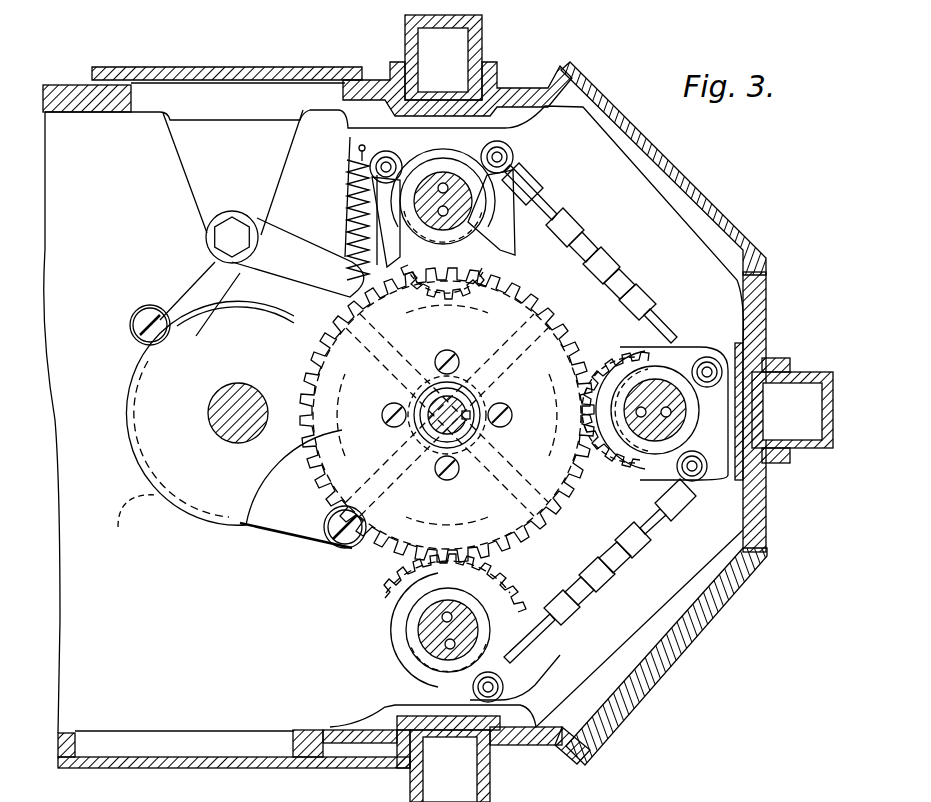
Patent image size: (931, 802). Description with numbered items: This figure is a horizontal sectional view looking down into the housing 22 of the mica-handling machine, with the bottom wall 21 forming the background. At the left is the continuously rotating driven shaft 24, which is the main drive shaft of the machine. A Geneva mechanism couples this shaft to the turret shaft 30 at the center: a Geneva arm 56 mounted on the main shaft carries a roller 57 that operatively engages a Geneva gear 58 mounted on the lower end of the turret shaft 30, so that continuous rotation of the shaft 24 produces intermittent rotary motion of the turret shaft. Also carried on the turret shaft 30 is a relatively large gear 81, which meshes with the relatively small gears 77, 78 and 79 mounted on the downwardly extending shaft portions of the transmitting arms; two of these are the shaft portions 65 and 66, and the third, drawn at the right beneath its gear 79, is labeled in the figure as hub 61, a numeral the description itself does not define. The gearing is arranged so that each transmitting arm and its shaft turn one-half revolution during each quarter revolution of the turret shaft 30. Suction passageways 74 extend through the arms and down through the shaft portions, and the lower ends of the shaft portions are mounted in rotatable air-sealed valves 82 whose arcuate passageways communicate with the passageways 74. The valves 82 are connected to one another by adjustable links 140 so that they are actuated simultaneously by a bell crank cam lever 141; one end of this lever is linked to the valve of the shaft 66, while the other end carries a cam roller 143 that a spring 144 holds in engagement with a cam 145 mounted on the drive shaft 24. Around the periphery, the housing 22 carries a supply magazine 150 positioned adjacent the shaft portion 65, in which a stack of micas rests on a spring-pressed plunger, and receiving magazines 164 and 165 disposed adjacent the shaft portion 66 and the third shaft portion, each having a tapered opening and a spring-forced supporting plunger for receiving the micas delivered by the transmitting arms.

The bottom wall 21 is at (173, 421).
The housing 22 is at (692, 248).
The driven shaft 24 is at (232, 442).
The turret shaft 30 is at (463, 405).
The Geneva arm 56 is at (263, 532).
The roller 57 is at (340, 541).
The Geneva gear 58 is at (333, 527).
The hub 61 is at (648, 462).
The shaft portion 65 is at (427, 640).
The shaft portion 66 is at (503, 232).
The passageways 74 is at (447, 212).
The small gear 77 is at (408, 583).
The small gear 78 is at (495, 273).
The small gear 79 is at (596, 485).
The large gear 81 is at (312, 373).
The rotatable air-sealed valves 82 is at (541, 212).
The adjustable links 140 is at (603, 266).
The bell crank cam lever 141 is at (277, 236).
The cam roller 143 is at (150, 320).
The spring 144 is at (345, 247).
The cam 145 is at (352, 170).
The supply magazine 150 is at (492, 790).
The receiving magazine 164 is at (483, 45).
The receiving magazine 165 is at (800, 372).